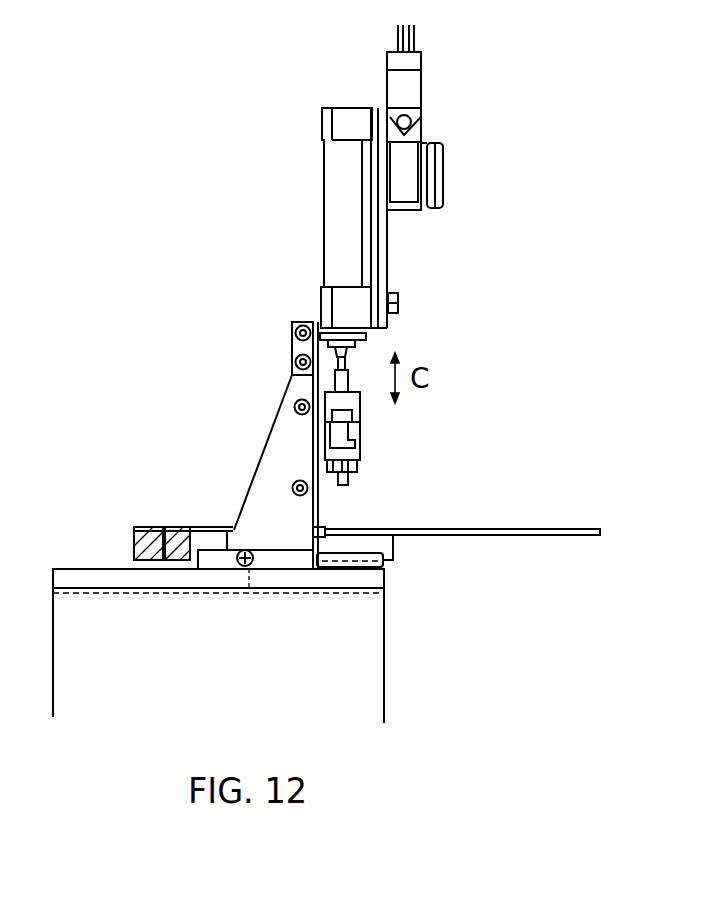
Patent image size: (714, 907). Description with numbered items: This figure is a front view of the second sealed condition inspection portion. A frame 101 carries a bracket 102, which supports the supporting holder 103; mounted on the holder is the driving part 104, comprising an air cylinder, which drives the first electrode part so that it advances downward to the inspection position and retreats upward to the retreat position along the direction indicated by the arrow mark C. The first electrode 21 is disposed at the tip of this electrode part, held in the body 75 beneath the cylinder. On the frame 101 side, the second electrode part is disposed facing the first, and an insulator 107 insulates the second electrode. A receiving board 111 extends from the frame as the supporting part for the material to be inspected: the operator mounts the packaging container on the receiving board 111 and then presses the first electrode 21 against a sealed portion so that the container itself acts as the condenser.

The frame 101 is at (373, 677).
The bracket 102 is at (263, 488).
The supporting holder 103 is at (377, 247).
The driving part 104 is at (337, 232).
The insulator 107 is at (147, 525).
The receiving board 111 is at (547, 527).
The holder body 75 is at (360, 430).
The first electrode 21 is at (360, 482).